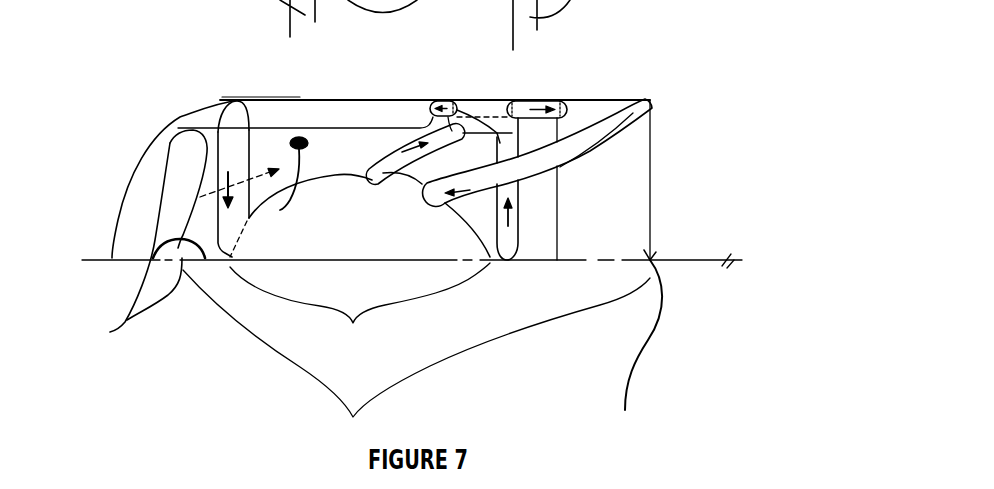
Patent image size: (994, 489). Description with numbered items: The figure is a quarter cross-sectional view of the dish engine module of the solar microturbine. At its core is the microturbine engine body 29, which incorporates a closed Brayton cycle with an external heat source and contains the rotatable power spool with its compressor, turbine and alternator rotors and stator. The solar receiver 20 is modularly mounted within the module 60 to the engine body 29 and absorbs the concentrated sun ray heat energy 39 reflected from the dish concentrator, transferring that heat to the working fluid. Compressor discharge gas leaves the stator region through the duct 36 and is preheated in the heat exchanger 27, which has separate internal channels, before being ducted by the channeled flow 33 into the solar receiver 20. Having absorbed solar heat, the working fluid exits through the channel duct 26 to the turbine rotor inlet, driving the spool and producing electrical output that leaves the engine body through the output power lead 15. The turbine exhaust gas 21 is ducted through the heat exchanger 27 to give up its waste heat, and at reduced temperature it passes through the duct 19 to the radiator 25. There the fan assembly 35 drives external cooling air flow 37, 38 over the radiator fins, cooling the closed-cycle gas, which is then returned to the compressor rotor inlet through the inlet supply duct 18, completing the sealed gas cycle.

The output power lead 15 is at (293, 140).
The inlet supply duct 18 is at (233, 148).
The duct to cooling radiator 19 is at (447, 100).
The solar receiver 20 is at (641, 351).
The turbine exhaust gas 21 is at (513, 243).
The radiator 25 is at (287, 110).
The channel duct 26 is at (637, 100).
The heat exchanger 27 is at (480, 103).
The microturbine engine body 29 is at (360, 312).
The duct to solar receiver 33 is at (527, 100).
The fan assembly 35 is at (144, 299).
The compressor discharge duct 36 is at (408, 140).
The external cooling air flow 37 is at (120, 196).
The external cooling air flow 38 is at (312, 162).
The concentrated solar ray heat energy 39 is at (693, 122).
The module 60 is at (416, 358).